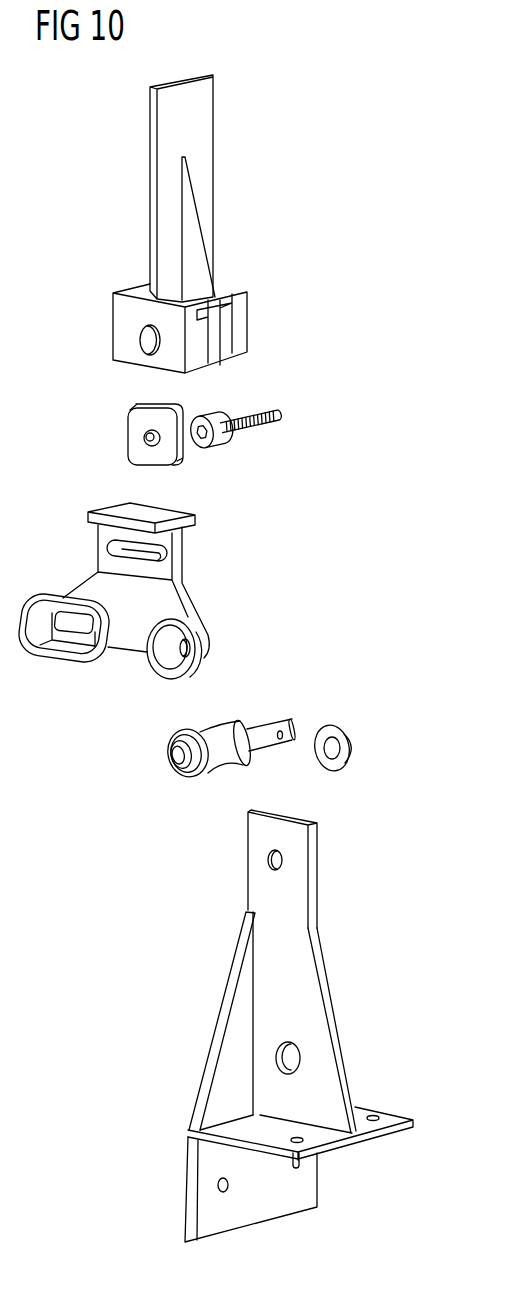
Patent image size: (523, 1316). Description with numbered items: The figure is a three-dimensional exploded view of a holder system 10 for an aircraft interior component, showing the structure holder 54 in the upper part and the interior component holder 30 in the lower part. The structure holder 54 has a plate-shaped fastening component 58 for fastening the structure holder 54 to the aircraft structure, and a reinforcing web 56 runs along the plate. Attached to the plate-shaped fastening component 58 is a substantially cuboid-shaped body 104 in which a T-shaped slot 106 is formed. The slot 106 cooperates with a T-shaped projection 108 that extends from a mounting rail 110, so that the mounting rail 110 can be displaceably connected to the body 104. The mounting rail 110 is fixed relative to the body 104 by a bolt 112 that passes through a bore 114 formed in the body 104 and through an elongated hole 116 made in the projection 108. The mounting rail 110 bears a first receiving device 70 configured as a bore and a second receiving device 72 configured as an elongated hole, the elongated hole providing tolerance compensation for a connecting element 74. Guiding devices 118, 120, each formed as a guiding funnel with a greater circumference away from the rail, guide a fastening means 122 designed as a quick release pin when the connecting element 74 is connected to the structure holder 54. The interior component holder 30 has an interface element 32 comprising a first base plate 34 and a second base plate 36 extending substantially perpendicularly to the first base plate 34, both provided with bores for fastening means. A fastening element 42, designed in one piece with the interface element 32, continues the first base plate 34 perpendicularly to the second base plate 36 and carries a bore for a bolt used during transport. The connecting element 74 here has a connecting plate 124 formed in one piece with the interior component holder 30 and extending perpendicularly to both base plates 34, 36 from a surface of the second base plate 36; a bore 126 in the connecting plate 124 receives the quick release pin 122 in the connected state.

The holder system 10 is at (368, 130).
The interior component holder 30 is at (152, 1140).
The interface element 32 is at (350, 1175).
The first base plate 34 is at (263, 1212).
The second base plate 36 is at (387, 1117).
The fastening element 42 is at (232, 1033).
The structure holder 54 is at (240, 172).
The gusset 56 is at (197, 280).
The plate-shaped fastening component 58 is at (163, 130).
The first receiving device 70 is at (183, 647).
The second receiving device 72 is at (90, 625).
The connecting element 74 is at (354, 1006).
The cuboid-shaped body 104 is at (120, 312).
The T-shaped slot 106 is at (215, 335).
The T-shaped projection 108 is at (122, 510).
The mounting rail 110 is at (173, 603).
The bolt 112 is at (282, 415).
The bore 114 is at (150, 340).
The elongated hole 116 is at (158, 552).
The guiding device 118 is at (170, 662).
The guiding device 120 is at (63, 645).
The fastening means 122 is at (330, 702).
The connecting plate 124 is at (303, 968).
The bore 126 is at (280, 862).